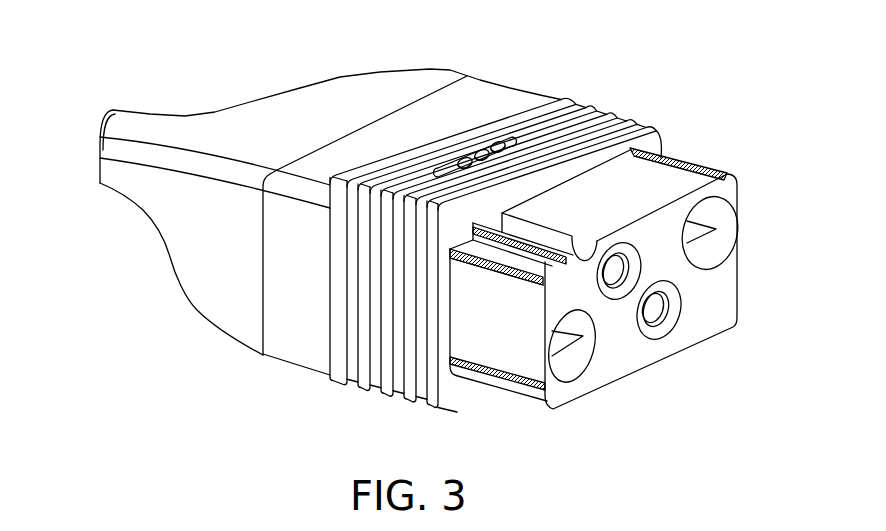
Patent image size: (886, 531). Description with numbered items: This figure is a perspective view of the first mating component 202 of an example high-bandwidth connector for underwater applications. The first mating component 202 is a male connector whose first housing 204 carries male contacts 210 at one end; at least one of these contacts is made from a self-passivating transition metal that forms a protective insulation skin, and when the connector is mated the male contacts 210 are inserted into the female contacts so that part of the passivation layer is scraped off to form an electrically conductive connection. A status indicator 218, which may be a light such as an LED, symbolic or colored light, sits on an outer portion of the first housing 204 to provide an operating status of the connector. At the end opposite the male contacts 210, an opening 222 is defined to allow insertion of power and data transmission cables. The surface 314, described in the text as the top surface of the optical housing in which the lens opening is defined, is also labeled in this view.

The first mating component 202 is at (134, 44).
The first housing 204 is at (423, 93).
The status indicator 218 is at (493, 120).
The opening 222 is at (97, 140).
The male contacts 210 is at (712, 230).
The surface of the optical housing 314 is at (612, 296).